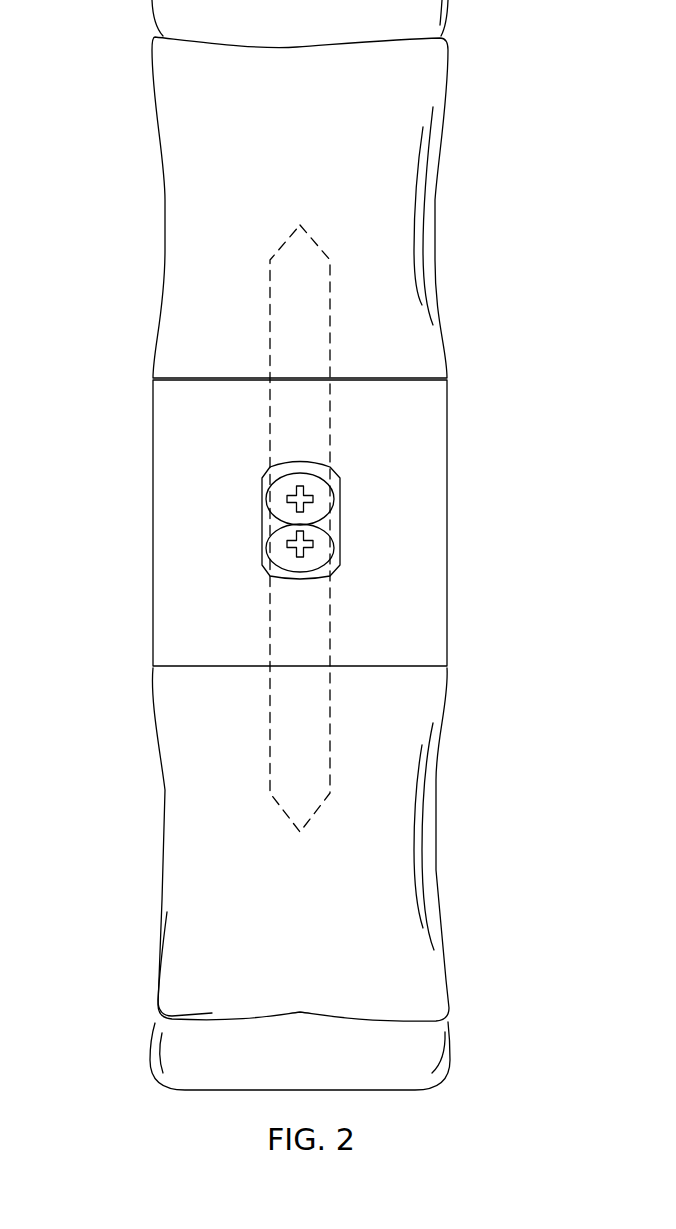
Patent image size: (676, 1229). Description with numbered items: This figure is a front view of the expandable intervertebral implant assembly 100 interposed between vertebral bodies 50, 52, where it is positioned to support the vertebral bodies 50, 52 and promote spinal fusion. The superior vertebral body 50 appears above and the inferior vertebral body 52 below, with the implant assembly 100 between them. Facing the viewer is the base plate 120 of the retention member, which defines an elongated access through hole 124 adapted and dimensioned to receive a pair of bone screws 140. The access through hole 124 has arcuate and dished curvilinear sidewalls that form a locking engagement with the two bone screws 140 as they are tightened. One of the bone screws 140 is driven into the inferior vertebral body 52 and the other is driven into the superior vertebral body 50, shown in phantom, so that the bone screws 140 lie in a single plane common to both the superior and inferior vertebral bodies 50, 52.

The superior vertebral body 50 is at (175, 183).
The inferior vertebral body 52 is at (182, 793).
The expandable intervertebral implant assembly 100 is at (326, 528).
The base plate 120 is at (223, 455).
The access through hole 124 is at (335, 528).
The bone screws 140 is at (323, 550).